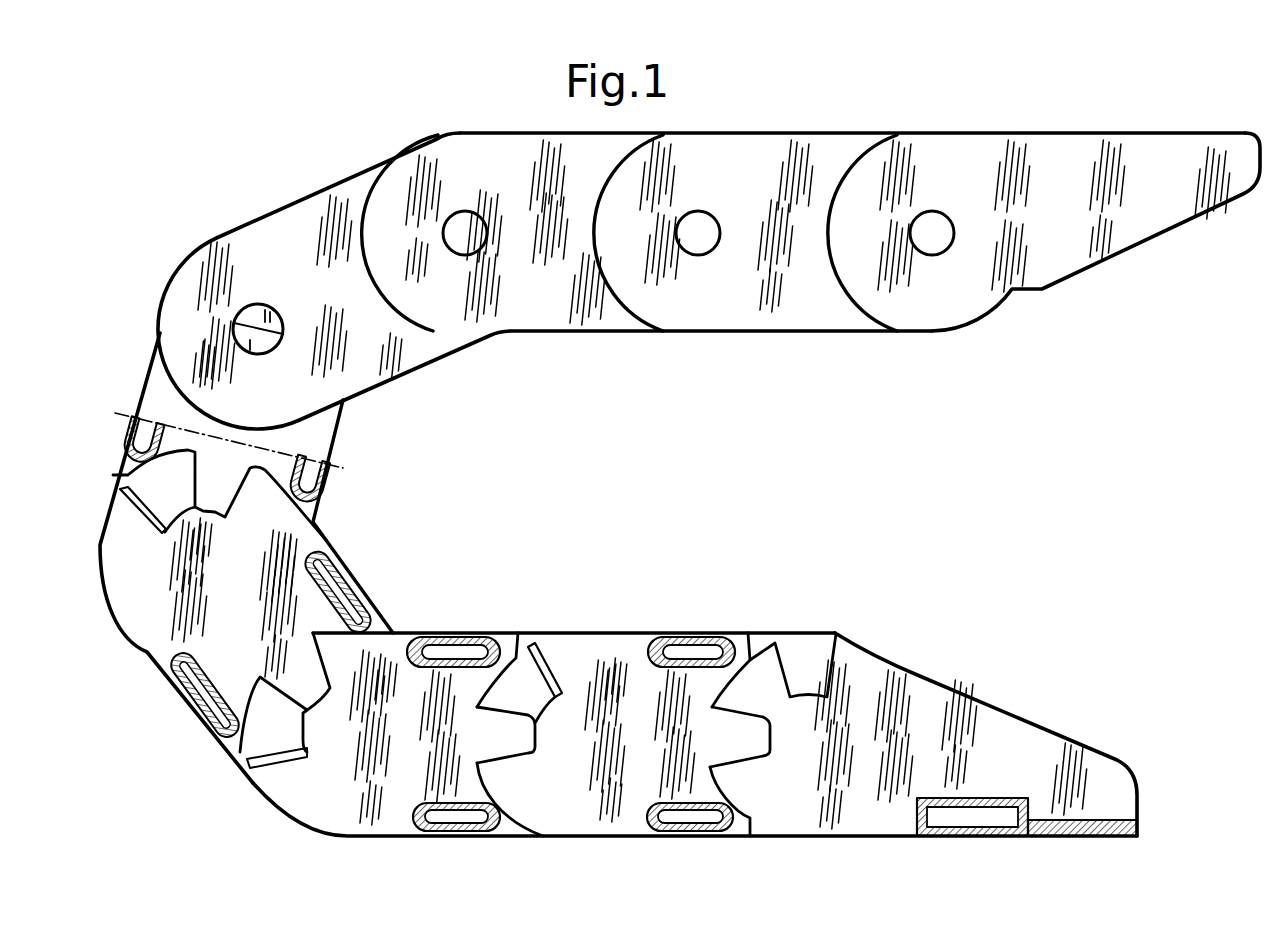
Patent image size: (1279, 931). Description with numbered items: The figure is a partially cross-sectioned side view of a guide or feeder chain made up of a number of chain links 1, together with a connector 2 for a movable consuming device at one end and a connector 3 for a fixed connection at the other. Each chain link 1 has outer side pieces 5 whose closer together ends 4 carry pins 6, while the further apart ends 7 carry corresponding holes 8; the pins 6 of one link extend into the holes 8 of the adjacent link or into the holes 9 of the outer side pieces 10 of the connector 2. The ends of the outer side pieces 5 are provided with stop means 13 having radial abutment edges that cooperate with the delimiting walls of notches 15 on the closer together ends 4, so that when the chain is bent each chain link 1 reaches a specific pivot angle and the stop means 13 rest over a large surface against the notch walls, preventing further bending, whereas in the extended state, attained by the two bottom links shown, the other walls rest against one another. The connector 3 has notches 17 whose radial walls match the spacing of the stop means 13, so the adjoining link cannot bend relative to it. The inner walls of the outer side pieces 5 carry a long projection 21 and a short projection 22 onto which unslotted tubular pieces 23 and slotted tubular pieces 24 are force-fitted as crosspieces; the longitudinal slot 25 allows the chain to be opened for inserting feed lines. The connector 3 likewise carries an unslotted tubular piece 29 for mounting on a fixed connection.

The chain link 1 is at (815, 332).
The connector for a movable consuming device 2 is at (1079, 277).
The connector for a fixed connection 3 is at (1055, 731).
The closer together ends of the outer side pieces 4 is at (893, 332).
The outer side piece 5 is at (741, 300).
The pin 6 is at (944, 240).
The further apart ends of the outer side pieces 7 is at (688, 307).
The hole 8 is at (682, 248).
The hole of the connector outer side piece 9 is at (918, 254).
The outer side piece of the connector 10 is at (1045, 160).
The stop means 13 is at (225, 493).
The notch 15 is at (150, 510).
The notch of the connector 17 is at (747, 713).
The long projection 21 is at (207, 698).
The short projection 22 is at (333, 585).
The unslotted tubular piece 23 is at (217, 737).
The slotted tubular piece 24 is at (373, 630).
The longitudinal slot 25 is at (297, 553).
The tubular piece of the fixed connector 29 is at (1047, 827).